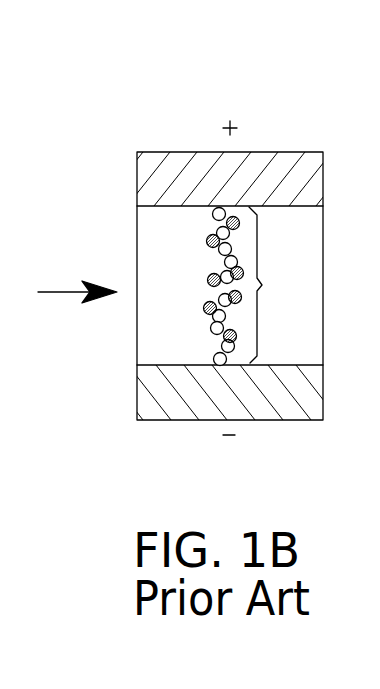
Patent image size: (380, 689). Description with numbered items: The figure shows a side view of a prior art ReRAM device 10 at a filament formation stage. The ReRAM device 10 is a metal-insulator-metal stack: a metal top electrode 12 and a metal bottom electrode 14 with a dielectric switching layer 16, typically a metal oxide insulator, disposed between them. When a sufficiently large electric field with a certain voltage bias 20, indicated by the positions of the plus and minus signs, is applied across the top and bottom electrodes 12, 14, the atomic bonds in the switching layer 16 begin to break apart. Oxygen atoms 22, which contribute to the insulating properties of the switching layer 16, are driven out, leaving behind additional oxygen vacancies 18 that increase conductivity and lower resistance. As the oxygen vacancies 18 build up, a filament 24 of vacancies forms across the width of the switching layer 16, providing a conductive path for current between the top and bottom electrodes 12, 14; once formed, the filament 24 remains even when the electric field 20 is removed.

The ReRAM device 10 is at (258, 30).
The metal top electrode 12 is at (178, 152).
The metal bottom electrode 14 is at (163, 420).
The dielectric switching layer 16 is at (164, 229).
The oxygen vacancies 18 is at (210, 328).
The voltage bias 20 is at (234, 124).
The oxygen atoms 22 is at (206, 242).
The filament 24 is at (262, 285).